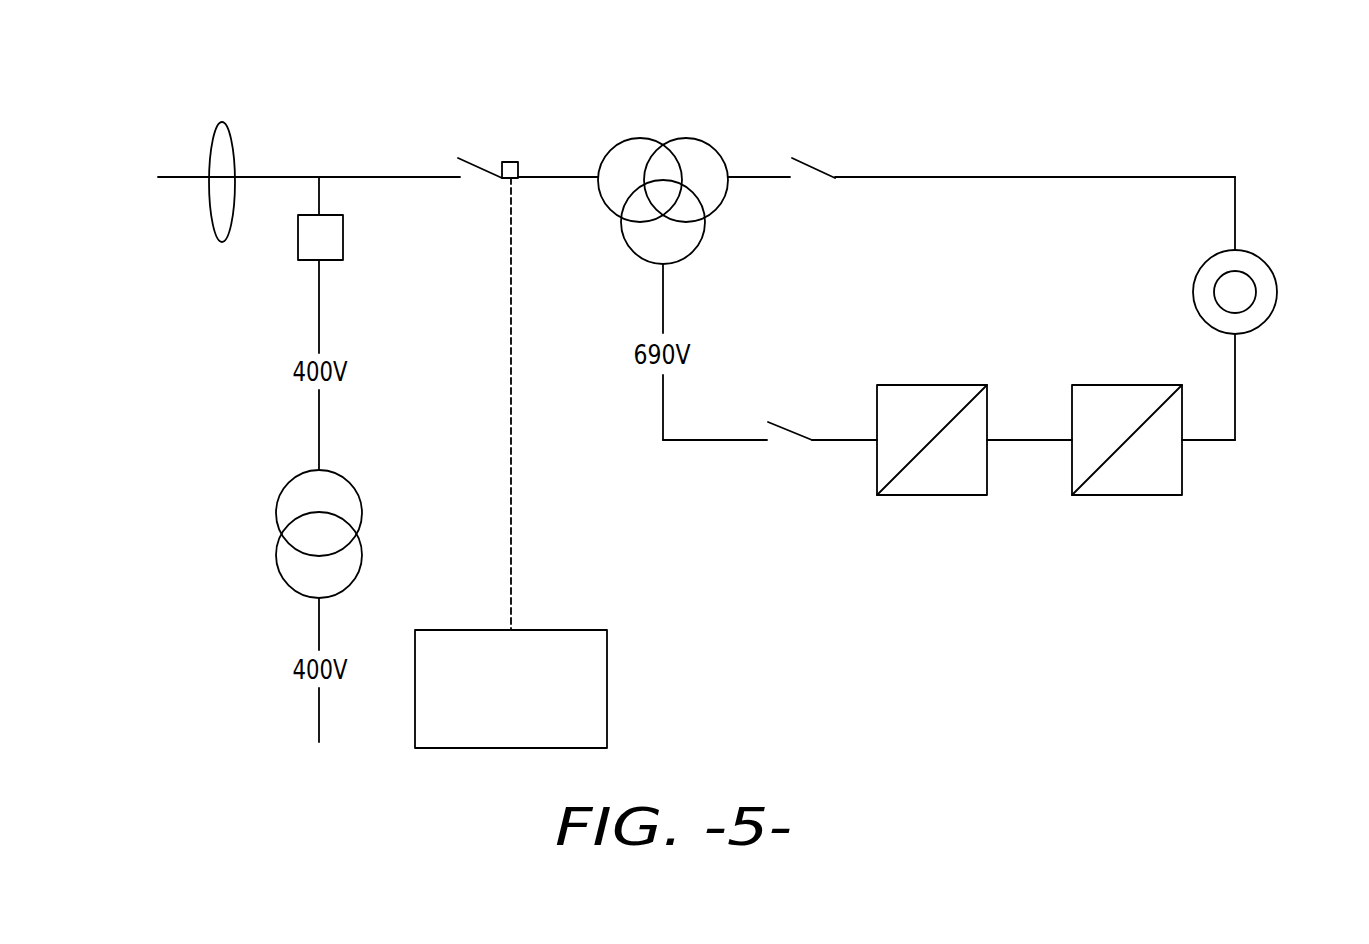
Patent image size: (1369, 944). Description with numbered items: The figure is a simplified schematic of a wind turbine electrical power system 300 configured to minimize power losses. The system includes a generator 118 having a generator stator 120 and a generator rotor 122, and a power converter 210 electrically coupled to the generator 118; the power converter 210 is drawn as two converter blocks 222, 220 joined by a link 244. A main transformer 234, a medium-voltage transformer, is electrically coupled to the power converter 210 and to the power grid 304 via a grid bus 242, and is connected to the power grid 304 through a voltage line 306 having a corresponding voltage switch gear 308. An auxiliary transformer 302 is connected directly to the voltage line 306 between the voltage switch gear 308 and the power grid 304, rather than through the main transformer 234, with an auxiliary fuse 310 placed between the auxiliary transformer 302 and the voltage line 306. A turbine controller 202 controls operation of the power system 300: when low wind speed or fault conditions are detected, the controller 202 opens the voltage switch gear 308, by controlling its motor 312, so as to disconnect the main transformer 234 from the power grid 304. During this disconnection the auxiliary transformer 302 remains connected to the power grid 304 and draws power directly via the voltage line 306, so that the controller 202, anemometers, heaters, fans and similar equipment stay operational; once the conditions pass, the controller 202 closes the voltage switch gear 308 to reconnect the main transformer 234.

The wind turbine electrical power system 300 is at (1138, 120).
The power grid 304 is at (133, 240).
The voltage line 306 is at (405, 173).
The voltage switch gear 308 is at (482, 152).
The auxiliary fuse 310 is at (295, 243).
The motor 312 is at (520, 168).
The grid bus 242 is at (234, 146).
The main transformer 234 is at (696, 134).
The auxiliary transformer 302 is at (370, 568).
The turbine controller 202 is at (487, 725).
The generator 118 is at (1271, 259).
The generator stator 120 is at (1278, 295).
The generator rotor 122 is at (1248, 314).
The power converter 210 is at (1063, 350).
The rotor side converter 222 is at (925, 495).
The DC link 244 is at (1027, 445).
The line side converter 220 is at (1137, 495).